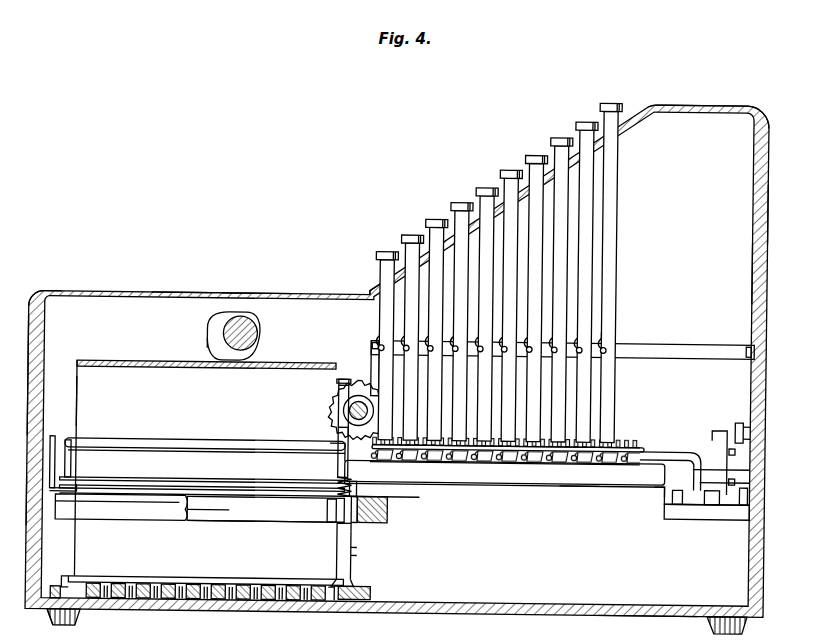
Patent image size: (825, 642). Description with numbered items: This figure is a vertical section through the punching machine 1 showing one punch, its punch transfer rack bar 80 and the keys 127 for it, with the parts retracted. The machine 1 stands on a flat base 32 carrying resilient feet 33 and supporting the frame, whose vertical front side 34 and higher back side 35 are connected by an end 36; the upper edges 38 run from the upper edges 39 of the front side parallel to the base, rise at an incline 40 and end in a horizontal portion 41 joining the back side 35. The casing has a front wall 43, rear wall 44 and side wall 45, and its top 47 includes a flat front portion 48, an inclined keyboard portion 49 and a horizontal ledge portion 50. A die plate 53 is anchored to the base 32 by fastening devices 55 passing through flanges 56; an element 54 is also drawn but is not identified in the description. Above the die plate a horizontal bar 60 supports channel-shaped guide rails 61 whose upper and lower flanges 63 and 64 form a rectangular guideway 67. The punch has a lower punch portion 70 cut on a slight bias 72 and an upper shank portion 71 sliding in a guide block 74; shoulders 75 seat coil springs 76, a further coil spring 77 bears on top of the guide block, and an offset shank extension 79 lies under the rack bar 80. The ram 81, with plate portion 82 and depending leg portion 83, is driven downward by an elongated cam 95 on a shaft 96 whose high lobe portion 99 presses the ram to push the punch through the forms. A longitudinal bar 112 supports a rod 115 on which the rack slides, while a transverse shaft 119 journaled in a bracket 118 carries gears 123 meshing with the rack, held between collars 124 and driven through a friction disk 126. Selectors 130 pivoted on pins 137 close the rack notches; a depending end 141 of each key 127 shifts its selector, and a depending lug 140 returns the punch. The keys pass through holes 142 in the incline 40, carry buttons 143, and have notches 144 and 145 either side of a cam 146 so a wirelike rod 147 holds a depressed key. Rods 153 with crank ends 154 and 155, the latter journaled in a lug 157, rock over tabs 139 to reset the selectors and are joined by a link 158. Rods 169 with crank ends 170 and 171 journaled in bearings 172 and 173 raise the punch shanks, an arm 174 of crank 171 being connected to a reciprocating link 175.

The punching machine 1 is at (30, 297).
The base 32 is at (648, 614).
The resilient feet 33 is at (88, 620).
The front side 34 is at (38, 378).
The back side 35 is at (757, 268).
The end 36 is at (112, 303).
The upper edges 38 is at (248, 296).
The upper edges of the front side 39 is at (48, 296).
The incline 40 is at (653, 104).
The horizontal portion 41 is at (720, 105).
The front wall 43 is at (28, 402).
The rear wall 44 is at (30, 505).
The side wall 45 is at (760, 222).
The top 47 is at (366, 293).
The flat horizontal front portion 48 is at (175, 296).
The inclined keyboard portion 49 is at (441, 232).
The horizontal ledge portion 50 is at (686, 104).
The die plate 53 is at (238, 602).
The spacer 54 is at (293, 604).
The fastening devices 55 is at (76, 580).
The flanges 56 is at (48, 616).
The horizontal bar 60 is at (388, 506).
The guide rails 61 is at (238, 484).
The upper flange 63 is at (260, 488).
The lower flange 64 is at (242, 525).
The guideway 67 is at (218, 525).
The lower punch portion 70 is at (345, 568).
The upper shank portion 71 is at (355, 540).
The bias 72 is at (380, 592).
The guide block 74 is at (362, 528).
The shoulders 75 is at (350, 555).
The coil springs 76 is at (336, 542).
The coil spring 77 is at (504, 479).
The shank extension 79 is at (338, 387).
The rack bar 80 is at (648, 444).
The ram 81 is at (82, 366).
The plate portion 82 is at (160, 366).
The depending leg portion 83 is at (76, 398).
The elongated cam 95 is at (216, 334).
The shaft 96 is at (252, 331).
The high lobe portion 99 is at (210, 350).
The longitudinal bar 112 is at (48, 443).
The rod 115 is at (222, 456).
The bracket 118 is at (706, 516).
The transverse shaft 119 is at (356, 396).
The gears 123 is at (330, 405).
The collars 124 is at (360, 402).
The friction disk 126 is at (340, 428).
The keys 127 is at (571, 132).
The selectors 130 is at (597, 472).
The pins 137 is at (548, 456).
The tabs 139 is at (622, 438).
The depending lug 140 is at (340, 456).
The depending end 141 is at (610, 397).
The holes 142 is at (390, 262).
The buttons 143 is at (474, 200).
The notch 144 is at (610, 341).
The notch 145 is at (620, 352).
The cam 146 is at (614, 347).
The wirelike rods 147 is at (703, 345).
The rods 153 is at (205, 442).
The crank end 154 is at (85, 442).
The crank end 155 is at (710, 501).
The lug 157 is at (743, 502).
The link 158 is at (752, 404).
The rods 169 is at (575, 487).
The crank end 170 is at (117, 508).
The crank end 171 is at (664, 490).
The bearing 172 is at (72, 499).
The bearing 173 is at (676, 499).
The arm 174 is at (750, 479).
The link 175 is at (750, 466).